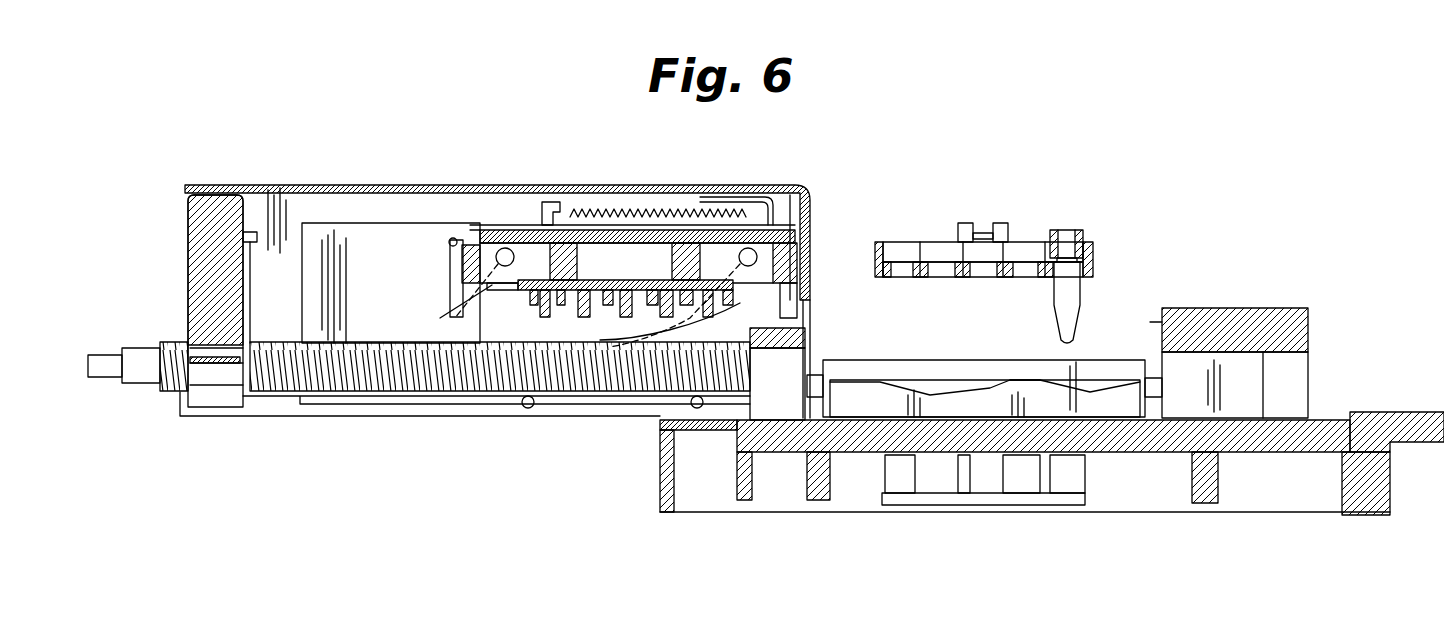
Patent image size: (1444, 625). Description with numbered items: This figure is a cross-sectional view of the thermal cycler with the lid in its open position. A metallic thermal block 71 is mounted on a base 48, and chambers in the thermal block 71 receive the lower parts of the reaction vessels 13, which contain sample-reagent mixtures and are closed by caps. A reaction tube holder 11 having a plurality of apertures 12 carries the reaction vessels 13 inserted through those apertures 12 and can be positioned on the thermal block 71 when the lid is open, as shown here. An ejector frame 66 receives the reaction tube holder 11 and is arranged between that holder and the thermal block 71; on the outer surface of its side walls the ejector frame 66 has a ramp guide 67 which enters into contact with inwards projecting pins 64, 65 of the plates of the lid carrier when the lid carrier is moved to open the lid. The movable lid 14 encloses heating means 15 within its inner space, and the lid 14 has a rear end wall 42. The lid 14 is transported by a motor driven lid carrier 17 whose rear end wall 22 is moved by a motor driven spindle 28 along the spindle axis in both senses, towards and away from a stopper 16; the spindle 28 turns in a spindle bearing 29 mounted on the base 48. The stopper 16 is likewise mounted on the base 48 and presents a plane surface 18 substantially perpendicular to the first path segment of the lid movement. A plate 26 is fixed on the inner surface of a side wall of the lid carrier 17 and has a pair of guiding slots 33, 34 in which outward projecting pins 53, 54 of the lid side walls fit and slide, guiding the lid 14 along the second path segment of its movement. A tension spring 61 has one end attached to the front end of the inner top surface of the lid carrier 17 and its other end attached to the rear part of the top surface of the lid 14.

The reaction tube holder 11 is at (878, 243).
The apertures 12 is at (940, 247).
The reaction vessels 13 is at (1063, 297).
The movable lid 14 is at (790, 230).
The heating means 15 is at (620, 280).
The stopper 16 is at (1245, 327).
The lid carrier 17 is at (405, 190).
The plane surface 18 is at (1155, 322).
The rear end wall 22 is at (193, 298).
The plate 26 is at (357, 237).
The motor driven spindle 28 is at (360, 385).
The spindle bearing 29 is at (800, 337).
The guiding slot 33 is at (440, 320).
The guiding slot 34 is at (600, 340).
The rear end wall 42 is at (455, 265).
The base 48 is at (1395, 417).
The outward projecting pin 53 is at (490, 250).
The outward projecting pin 54 is at (758, 258).
The tension spring 61 is at (590, 212).
The inwards projecting pin 64 is at (520, 406).
The inwards projecting pin 65 is at (690, 404).
The ejector frame 66 is at (890, 372).
The ramp guide 67 is at (995, 390).
The thermal block 71 is at (938, 500).